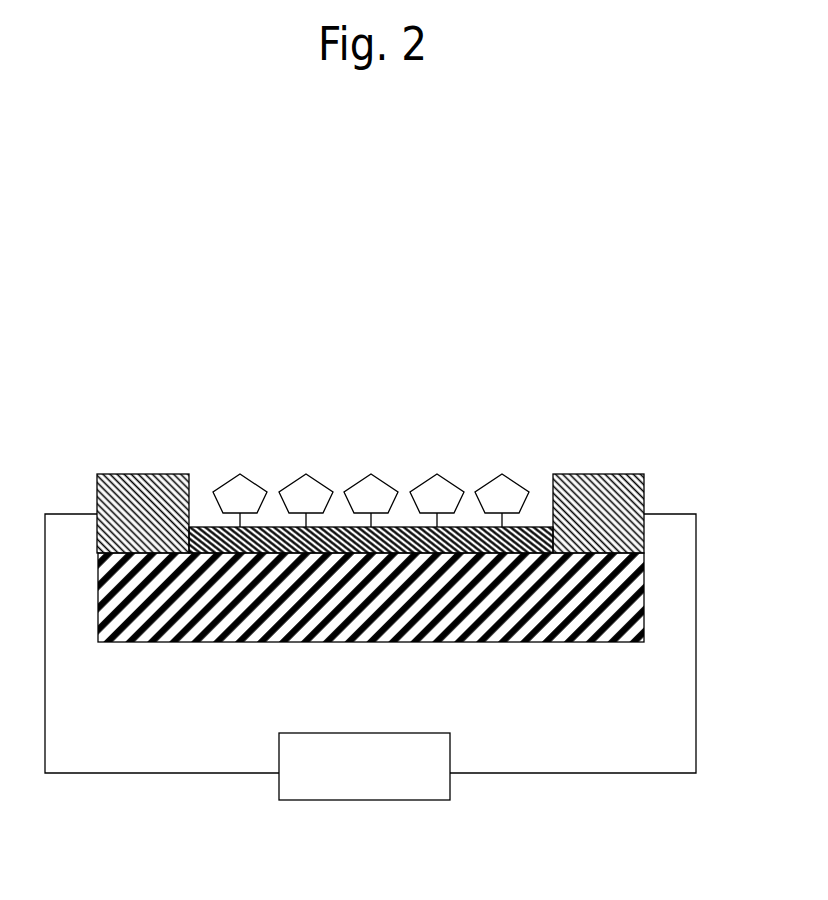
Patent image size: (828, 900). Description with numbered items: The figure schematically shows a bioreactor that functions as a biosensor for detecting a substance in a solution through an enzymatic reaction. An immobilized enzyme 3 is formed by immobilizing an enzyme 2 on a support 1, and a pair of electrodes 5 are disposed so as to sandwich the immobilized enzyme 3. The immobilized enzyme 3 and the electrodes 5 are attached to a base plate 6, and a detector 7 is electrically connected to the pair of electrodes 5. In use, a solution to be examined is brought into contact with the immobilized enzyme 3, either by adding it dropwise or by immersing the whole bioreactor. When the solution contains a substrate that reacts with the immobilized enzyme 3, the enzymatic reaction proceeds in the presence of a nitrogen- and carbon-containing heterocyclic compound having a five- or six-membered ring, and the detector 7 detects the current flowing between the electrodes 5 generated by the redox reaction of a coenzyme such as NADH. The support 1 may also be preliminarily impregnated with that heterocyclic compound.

The support 1 is at (270, 527).
The enzyme 2 is at (262, 393).
The immobilized enzyme 3 is at (371, 443).
The electrodes 5 is at (139, 478).
The base plate 6 is at (226, 632).
The detector 7 is at (364, 797).